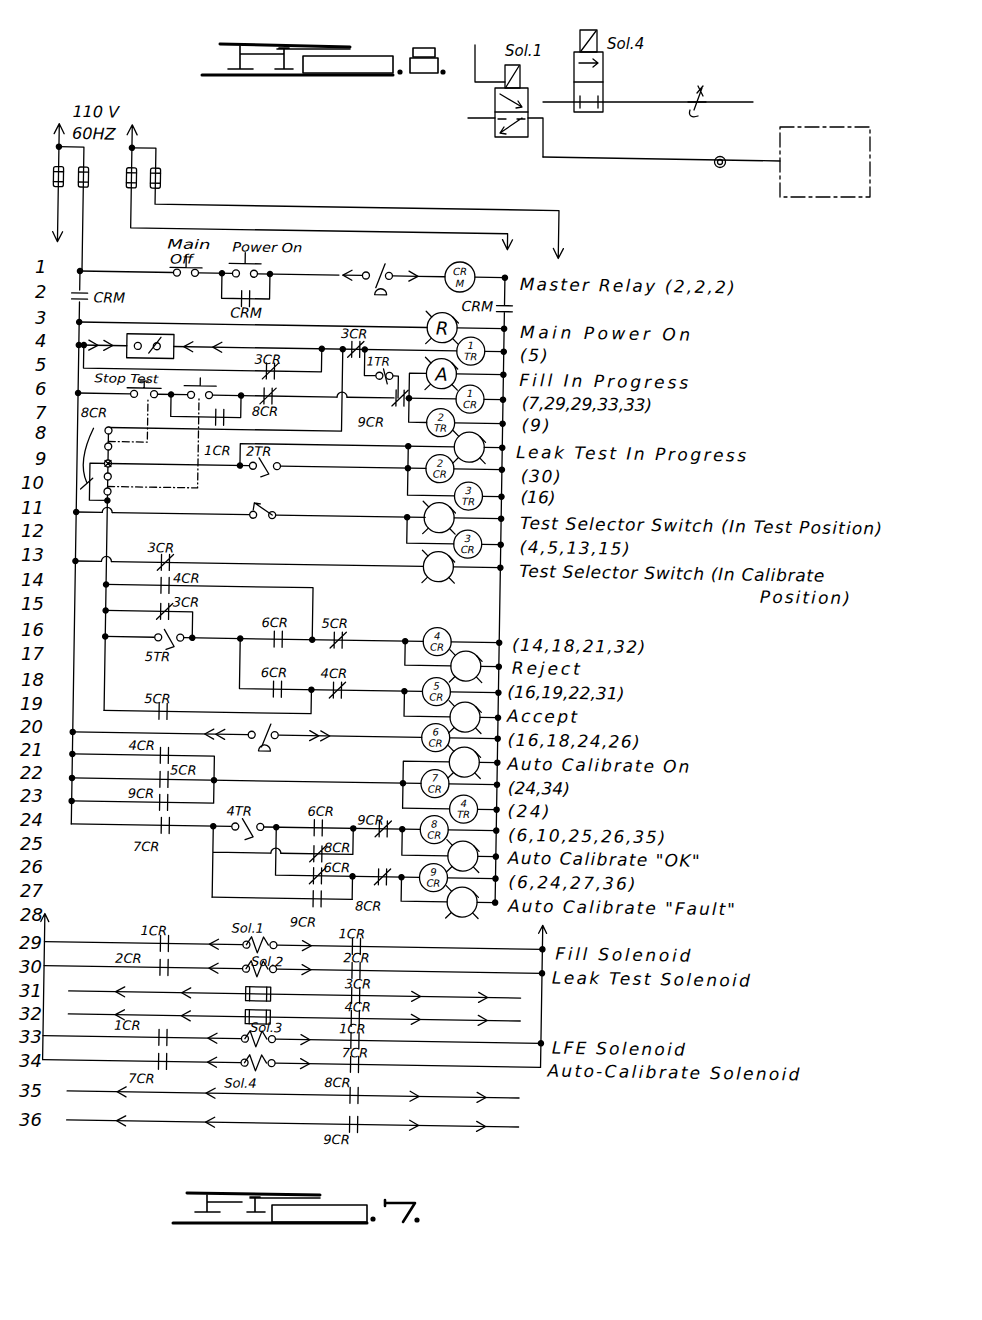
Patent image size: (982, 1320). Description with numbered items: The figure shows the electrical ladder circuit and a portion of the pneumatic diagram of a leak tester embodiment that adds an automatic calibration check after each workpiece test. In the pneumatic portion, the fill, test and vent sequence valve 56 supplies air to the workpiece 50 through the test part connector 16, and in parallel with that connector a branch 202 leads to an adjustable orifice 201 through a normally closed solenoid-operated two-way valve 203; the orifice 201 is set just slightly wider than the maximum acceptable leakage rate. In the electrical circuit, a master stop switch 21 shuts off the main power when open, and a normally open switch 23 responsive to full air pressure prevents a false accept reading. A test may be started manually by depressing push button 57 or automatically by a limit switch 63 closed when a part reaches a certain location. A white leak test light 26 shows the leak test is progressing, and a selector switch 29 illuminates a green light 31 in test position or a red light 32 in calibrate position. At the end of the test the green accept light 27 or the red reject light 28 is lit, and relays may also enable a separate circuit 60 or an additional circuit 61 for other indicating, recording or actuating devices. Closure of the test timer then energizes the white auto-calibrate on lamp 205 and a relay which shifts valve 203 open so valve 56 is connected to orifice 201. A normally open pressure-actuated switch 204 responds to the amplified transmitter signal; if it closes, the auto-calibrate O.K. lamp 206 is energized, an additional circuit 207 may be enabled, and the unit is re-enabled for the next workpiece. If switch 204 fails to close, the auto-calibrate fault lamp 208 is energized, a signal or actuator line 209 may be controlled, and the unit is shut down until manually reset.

In FIG. 7, the master stop switch 21 is at (187, 277).
In FIG. 7, the normally open switch 23 is at (362, 278).
In FIG. 7, the limit switch 63 is at (154, 341).
In FIG. 7, the push button 57 is at (203, 386).
In FIG. 7, the leak test light 26 is at (411, 441).
In FIG. 7, the selector switch 29 is at (266, 519).
In FIG. 7, the green light 31 is at (411, 524).
In FIG. 7, the red light 32 is at (440, 579).
In FIG. 7, the reject light 28 is at (469, 647).
In FIG. 7, the accept light 27 is at (456, 713).
In FIG. 7, the pressure-actuated switch 204 is at (274, 742).
In FIG. 7, the auto-calibrate on lamp 205 is at (452, 760).
In FIG. 7, the auto-calibrate O.K. lamp 206 is at (455, 851).
In FIG. 7, the auto-calibrate fault lamp 208 is at (456, 904).
In FIG. 7, the separate circuit 60 is at (532, 991).
In FIG. 7, the additional circuit 61 is at (532, 1014).
In FIG. 7, the additional circuit 207 is at (532, 1091).
In FIG. 7, the signal or actuator line 209 is at (532, 1120).
In FIG. 8, the fill, test and vent sequence valve 56 is at (495, 104).
In FIG. 8, the solenoid-operated two-way valve 203 is at (604, 88).
In FIG. 8, the branch 202 is at (625, 104).
In FIG. 8, the adjustable orifice 201 is at (700, 110).
In FIG. 8, the workpiece 50 is at (827, 124).
In FIG. 8, the test part connector 16 is at (718, 169).